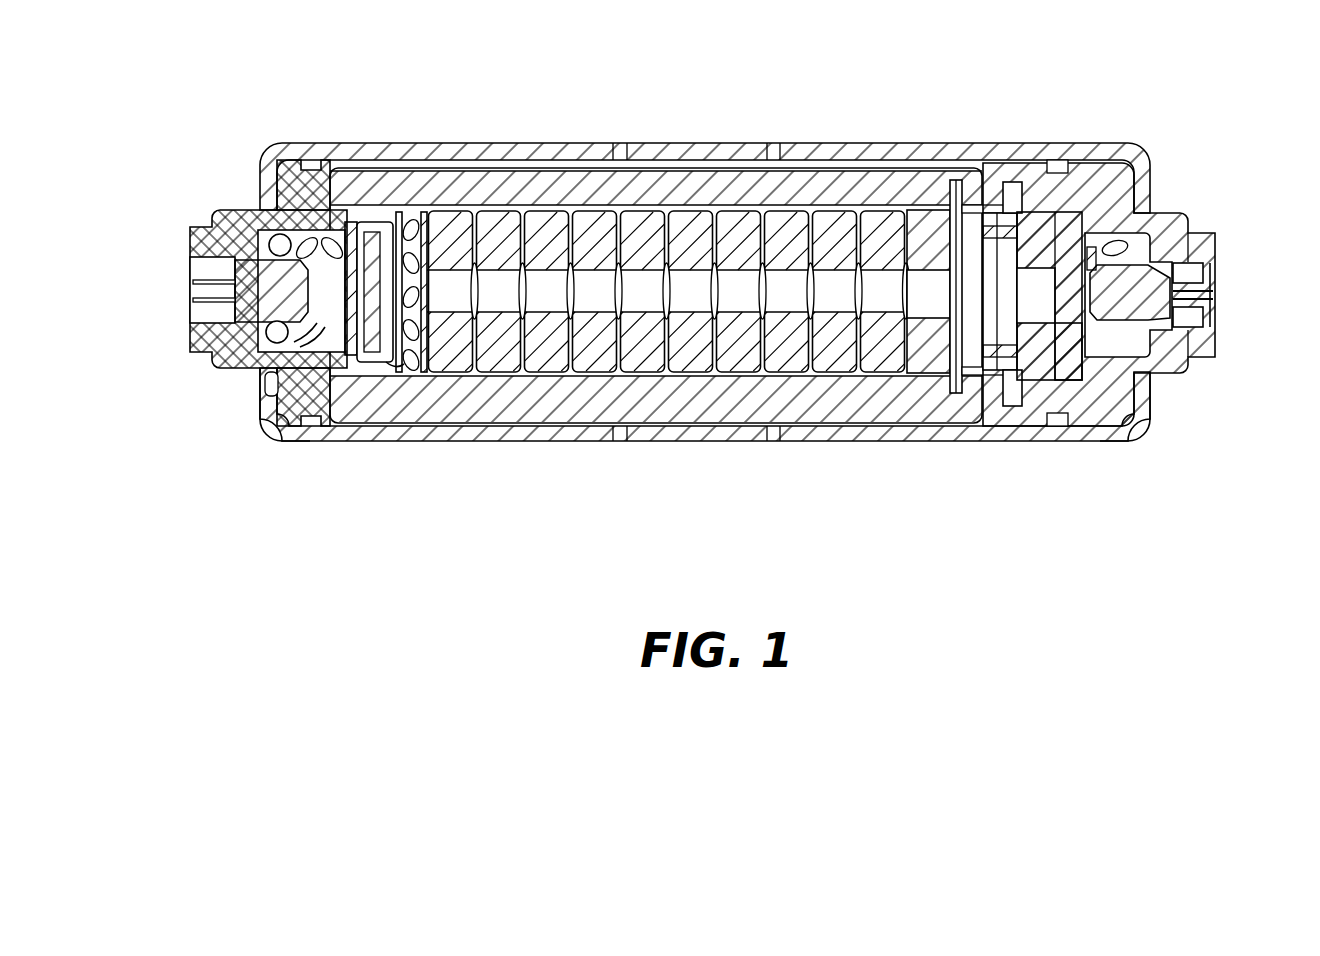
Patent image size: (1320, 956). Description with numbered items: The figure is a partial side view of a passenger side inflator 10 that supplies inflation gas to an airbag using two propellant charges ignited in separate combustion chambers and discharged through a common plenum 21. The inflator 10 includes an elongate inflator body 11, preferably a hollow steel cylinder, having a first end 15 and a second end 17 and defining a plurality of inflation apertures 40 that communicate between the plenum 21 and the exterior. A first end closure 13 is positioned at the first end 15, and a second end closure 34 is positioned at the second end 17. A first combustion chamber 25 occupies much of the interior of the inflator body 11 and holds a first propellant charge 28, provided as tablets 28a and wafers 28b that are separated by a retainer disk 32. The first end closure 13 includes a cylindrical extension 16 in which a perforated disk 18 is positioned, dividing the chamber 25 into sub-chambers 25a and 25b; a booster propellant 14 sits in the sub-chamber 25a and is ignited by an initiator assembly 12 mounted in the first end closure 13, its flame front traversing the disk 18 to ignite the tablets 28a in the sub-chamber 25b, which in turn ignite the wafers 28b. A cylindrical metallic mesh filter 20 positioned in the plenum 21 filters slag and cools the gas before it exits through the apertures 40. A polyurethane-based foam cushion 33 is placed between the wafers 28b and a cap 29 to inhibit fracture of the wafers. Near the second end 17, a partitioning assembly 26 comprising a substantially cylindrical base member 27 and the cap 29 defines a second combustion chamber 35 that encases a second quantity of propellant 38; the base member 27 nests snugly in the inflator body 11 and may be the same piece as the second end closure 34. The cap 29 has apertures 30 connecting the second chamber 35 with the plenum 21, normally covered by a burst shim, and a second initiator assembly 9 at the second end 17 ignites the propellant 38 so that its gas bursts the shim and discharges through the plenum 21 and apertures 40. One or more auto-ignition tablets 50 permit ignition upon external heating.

The second initiator assembly 9 is at (1137, 298).
The inflator 10 is at (225, 123).
The inflator body 11 is at (300, 142).
The initiator assembly 12 is at (248, 294).
The first end closure 13 is at (262, 421).
The booster propellant 14 is at (268, 244).
The first end 15 is at (262, 398).
The cylindrical extension 16 is at (407, 215).
The second end 17 is at (1150, 403).
The perforated disk 18 is at (355, 222).
The filter 20 is at (550, 400).
The plenum 21 is at (660, 165).
The first combustion chamber 25 is at (418, 217).
The sub-chamber 25a is at (330, 340).
The sub-chamber 25b is at (405, 372).
The partitioning assembly 26 is at (1007, 182).
The base member 27 is at (1070, 216).
The first propellant charge 28 is at (458, 175).
The tablets 28a is at (468, 203).
The wafers 28b is at (460, 373).
The cap 29 is at (1017, 407).
The apertures 30 is at (958, 367).
The retainer disk 32 is at (423, 362).
The cushion 33 is at (923, 220).
The second end closure 34 is at (1101, 417).
The second combustion chamber 35 is at (1058, 365).
The second quantity of propellant 38 is at (1140, 200).
The inflation apertures 40 is at (770, 443).
The auto-ignition tablets 50 is at (305, 343).